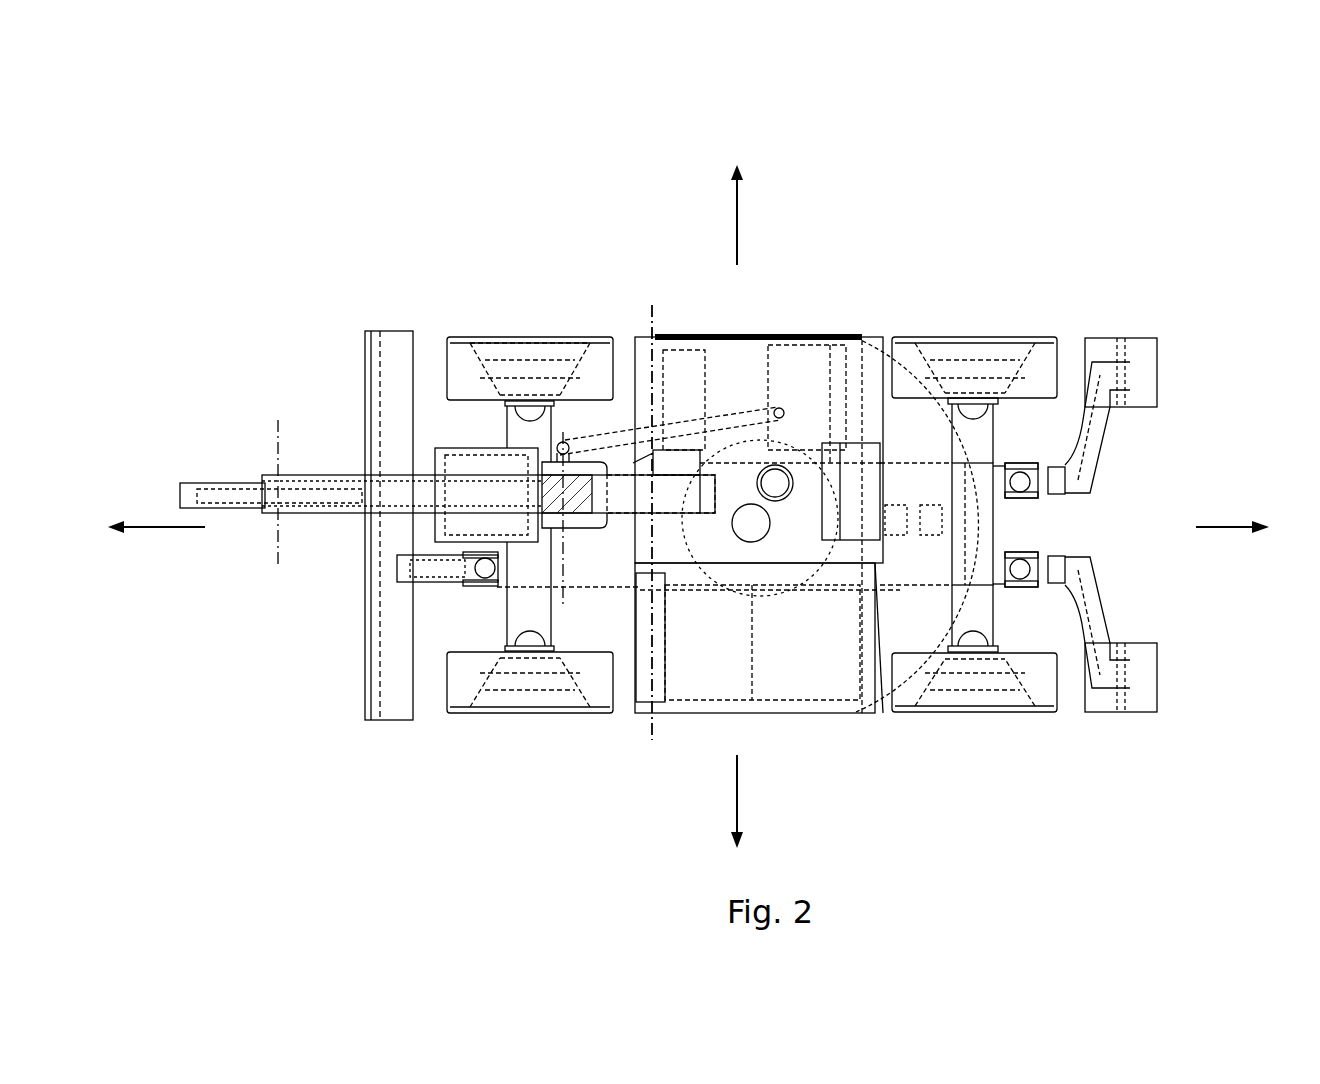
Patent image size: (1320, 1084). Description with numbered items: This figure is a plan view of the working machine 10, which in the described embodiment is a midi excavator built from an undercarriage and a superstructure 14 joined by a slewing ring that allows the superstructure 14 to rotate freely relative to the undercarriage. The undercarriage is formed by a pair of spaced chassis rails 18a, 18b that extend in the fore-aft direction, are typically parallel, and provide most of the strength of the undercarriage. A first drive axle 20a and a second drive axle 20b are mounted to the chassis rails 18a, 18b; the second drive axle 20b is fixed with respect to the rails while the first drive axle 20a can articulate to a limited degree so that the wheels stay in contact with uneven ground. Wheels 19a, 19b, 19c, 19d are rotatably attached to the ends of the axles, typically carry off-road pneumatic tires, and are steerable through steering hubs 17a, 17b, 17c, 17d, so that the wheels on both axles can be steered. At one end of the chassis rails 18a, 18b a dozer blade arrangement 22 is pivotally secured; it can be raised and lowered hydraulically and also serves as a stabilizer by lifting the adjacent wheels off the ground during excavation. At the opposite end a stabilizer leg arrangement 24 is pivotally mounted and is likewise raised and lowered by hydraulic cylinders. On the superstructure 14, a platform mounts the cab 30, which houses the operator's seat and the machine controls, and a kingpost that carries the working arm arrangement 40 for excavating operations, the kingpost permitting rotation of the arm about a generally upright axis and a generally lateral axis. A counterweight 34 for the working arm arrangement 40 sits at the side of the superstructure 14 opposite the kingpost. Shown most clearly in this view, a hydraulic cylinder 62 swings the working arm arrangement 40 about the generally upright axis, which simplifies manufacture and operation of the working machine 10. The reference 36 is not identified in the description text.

The working machine 10 is at (1142, 242).
The superstructure 14 is at (757, 385).
The steering hub 17a is at (521, 650).
The steering hub 17b is at (520, 404).
The steering hub 17c is at (972, 396).
The steering hub 17d is at (970, 633).
The chassis rail 18a is at (998, 463).
The chassis rail 18b is at (990, 584).
The wheel 19a is at (475, 688).
The wheel 19b is at (474, 343).
The wheel 19c is at (1033, 345).
The wheel 19d is at (952, 688).
The first drive axle 20a is at (549, 650).
The second drive axle 20b is at (980, 605).
The dozer blade arrangement 22 is at (316, 719).
The stabilizer leg arrangement 24 is at (1182, 669).
The cab 30 is at (762, 662).
The counterweight 34 is at (953, 485).
The pivot arc 36 is at (878, 415).
The working arm arrangement 40 is at (302, 590).
The hydraulic cylinder 62 is at (594, 442).